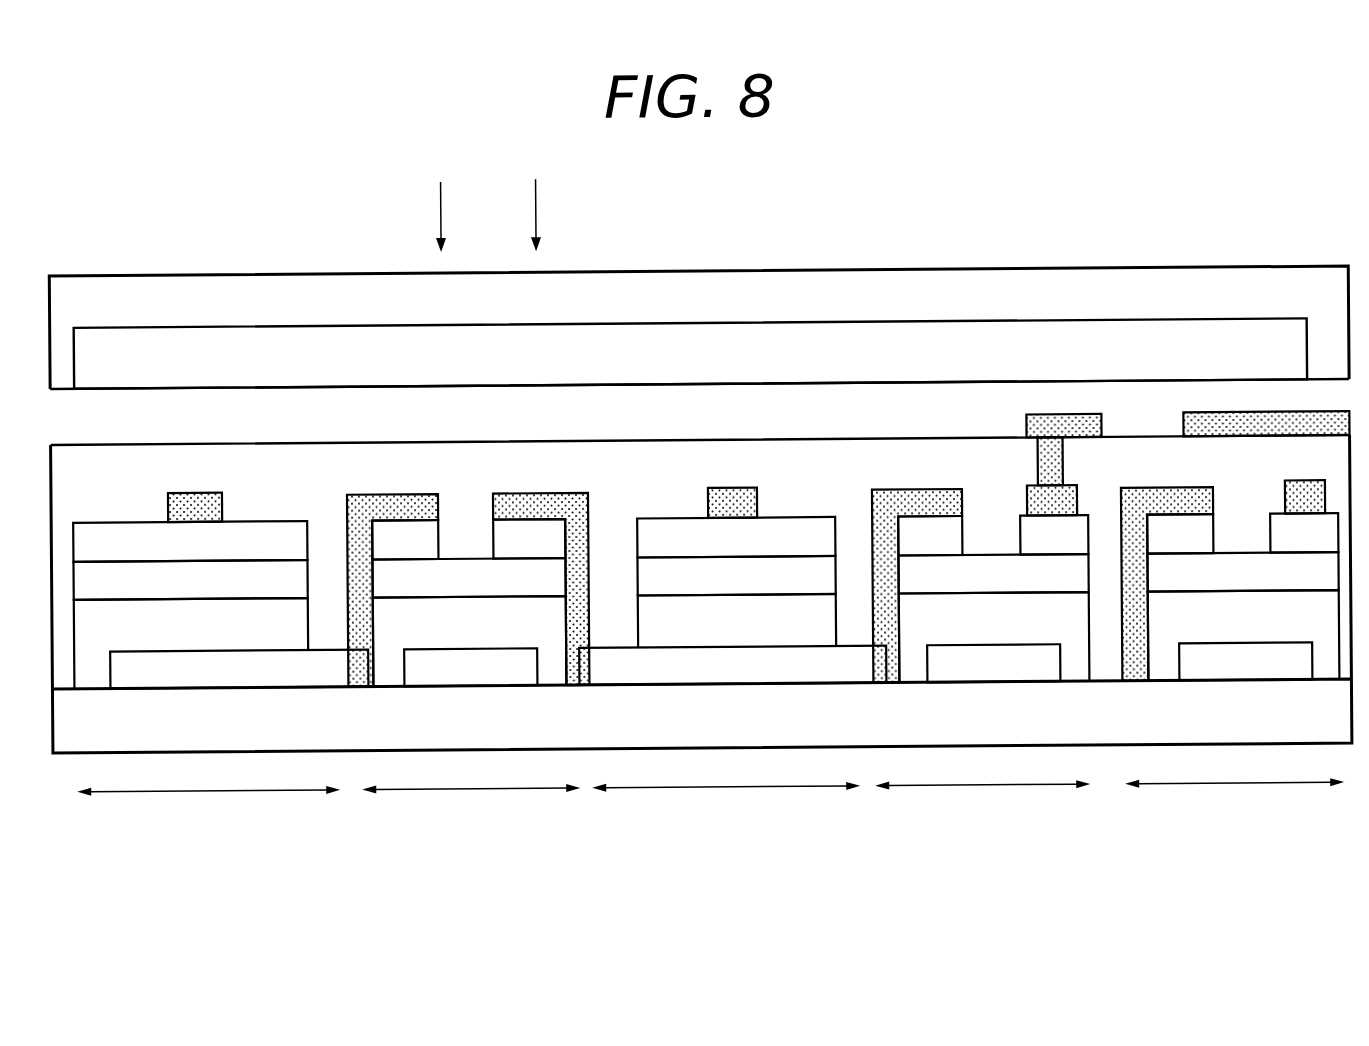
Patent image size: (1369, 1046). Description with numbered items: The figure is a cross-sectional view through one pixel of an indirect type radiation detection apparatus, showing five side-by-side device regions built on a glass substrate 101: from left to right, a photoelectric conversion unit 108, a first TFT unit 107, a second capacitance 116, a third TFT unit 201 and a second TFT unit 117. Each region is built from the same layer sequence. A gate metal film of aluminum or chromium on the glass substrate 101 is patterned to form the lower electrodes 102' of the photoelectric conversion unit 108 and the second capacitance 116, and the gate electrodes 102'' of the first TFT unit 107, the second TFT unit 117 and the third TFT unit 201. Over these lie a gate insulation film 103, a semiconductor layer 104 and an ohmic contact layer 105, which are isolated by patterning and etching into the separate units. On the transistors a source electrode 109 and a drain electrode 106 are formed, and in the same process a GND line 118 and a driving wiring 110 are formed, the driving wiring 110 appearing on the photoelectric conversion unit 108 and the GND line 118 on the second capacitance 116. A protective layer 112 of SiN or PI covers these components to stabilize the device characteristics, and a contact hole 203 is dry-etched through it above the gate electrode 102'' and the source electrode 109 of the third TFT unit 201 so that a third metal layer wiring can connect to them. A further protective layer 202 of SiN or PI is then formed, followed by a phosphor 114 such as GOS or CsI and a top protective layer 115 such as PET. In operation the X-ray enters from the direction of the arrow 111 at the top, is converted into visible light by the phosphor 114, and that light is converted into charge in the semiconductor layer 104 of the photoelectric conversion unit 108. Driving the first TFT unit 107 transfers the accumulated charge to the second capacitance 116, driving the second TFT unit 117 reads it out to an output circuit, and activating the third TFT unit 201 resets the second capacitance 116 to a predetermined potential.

The glass substrate 101 is at (612, 714).
The lower electrode 102' is at (498, 694).
The gate electrode 102'' is at (856, 689).
The gate insulation film 103 is at (215, 636).
The semiconductor layer 104 is at (232, 571).
The ohmic contact layer 105 is at (150, 541).
The drain electrode 106 is at (566, 510).
The TFT unit 1 107 is at (470, 794).
The photoelectric conversion unit 108 is at (217, 794).
The source electrode 109 is at (358, 503).
The driving wiring 110 is at (200, 499).
The arrow 111 is at (538, 214).
The protective layer 112 is at (108, 483).
The phosphor 114 is at (1185, 354).
The protective layer 115 is at (1085, 306).
The capacitance C2 116 is at (732, 794).
The TFT unit 2 117 is at (1230, 794).
The GND line 118 is at (732, 505).
The TFT unit 3 201 is at (983, 794).
The protective layer 202 is at (200, 415).
The contact hole 203 is at (1042, 447).